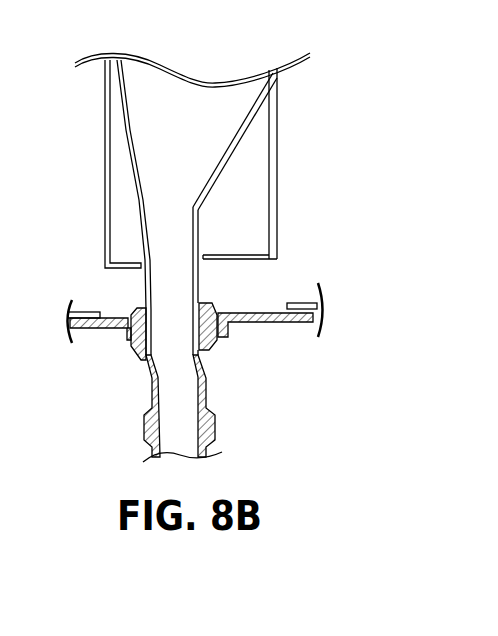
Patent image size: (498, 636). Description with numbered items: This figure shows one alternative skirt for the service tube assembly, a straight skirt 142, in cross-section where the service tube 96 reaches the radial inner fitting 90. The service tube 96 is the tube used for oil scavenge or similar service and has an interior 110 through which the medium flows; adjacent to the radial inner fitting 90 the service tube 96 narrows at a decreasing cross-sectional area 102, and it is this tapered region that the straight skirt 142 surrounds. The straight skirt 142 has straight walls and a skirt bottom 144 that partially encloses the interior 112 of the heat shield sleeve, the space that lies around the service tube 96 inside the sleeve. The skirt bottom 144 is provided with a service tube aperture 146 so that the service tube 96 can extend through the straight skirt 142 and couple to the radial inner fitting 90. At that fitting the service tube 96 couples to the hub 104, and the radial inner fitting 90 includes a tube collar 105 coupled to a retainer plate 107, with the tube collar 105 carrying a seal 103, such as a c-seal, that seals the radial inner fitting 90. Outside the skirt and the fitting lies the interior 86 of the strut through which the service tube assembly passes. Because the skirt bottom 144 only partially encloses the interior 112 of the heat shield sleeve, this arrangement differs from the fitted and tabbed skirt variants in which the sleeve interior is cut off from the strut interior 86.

The interior of the strut 86 is at (77, 147).
The radial inner fitting 90 is at (226, 346).
The service tube 96 is at (249, 104).
The decreasing cross-sectional area 102 is at (232, 137).
The seal 103 is at (220, 337).
The hub 104 is at (88, 306).
The tube collar 105 is at (140, 360).
The retainer plate 107 is at (92, 340).
The interior of the service tube 110 is at (182, 119).
The interior of the heat shield sleeve 112 is at (250, 146).
The straight skirt 142 is at (272, 203).
The skirt bottom 144 is at (240, 262).
The service tube aperture 146 is at (204, 271).